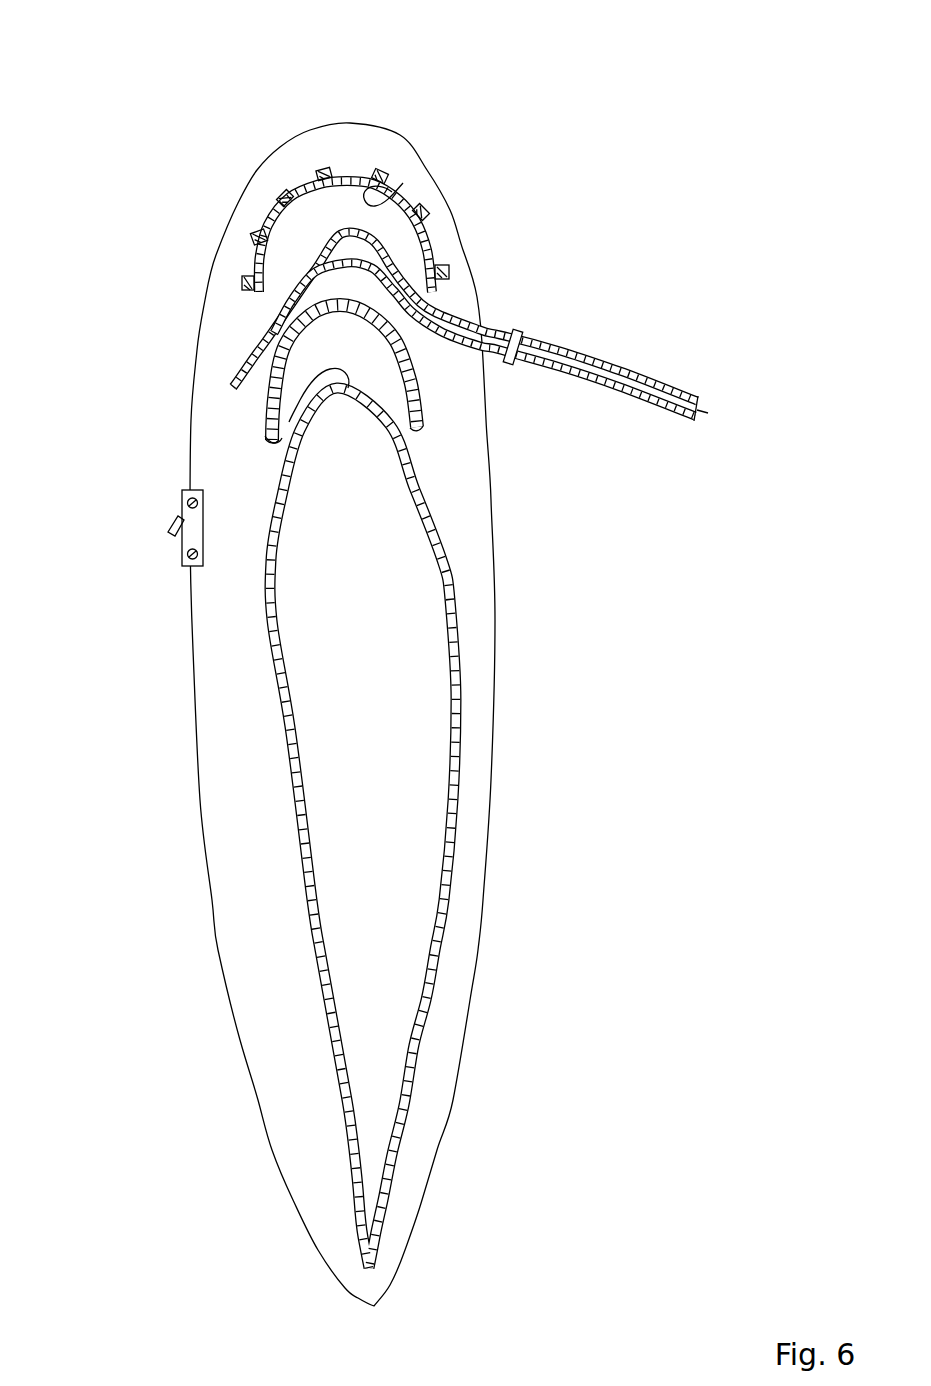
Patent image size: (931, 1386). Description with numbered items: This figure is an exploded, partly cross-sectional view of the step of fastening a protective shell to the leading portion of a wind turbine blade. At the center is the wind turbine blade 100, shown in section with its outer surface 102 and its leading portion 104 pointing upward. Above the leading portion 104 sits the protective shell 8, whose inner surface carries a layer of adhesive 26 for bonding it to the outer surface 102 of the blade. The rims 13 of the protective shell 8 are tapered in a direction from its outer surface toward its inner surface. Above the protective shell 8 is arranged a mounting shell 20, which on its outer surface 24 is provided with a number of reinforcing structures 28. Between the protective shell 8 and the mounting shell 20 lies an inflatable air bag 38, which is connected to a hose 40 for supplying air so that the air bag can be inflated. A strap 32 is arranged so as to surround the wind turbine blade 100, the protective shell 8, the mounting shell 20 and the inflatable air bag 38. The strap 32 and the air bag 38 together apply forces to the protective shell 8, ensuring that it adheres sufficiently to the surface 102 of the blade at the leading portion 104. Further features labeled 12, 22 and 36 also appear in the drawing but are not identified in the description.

The protective shell 8 is at (418, 357).
The inner strap layer 12 is at (416, 355).
The rims 13 is at (415, 415).
The mounting shell 20 is at (339, 146).
The hook loop 22 is at (403, 183).
The outer surface 24 is at (347, 176).
The layer of adhesive 26 is at (418, 408).
The reinforcing structures 28 is at (290, 190).
The strap 32 is at (496, 625).
The hinge plate 36 is at (185, 545).
The inflatable air bag 38 is at (432, 294).
The hose 40 is at (696, 398).
The wind turbine blade 100 is at (455, 773).
The outer surface 102 is at (462, 688).
The leading portion 104 is at (295, 418).